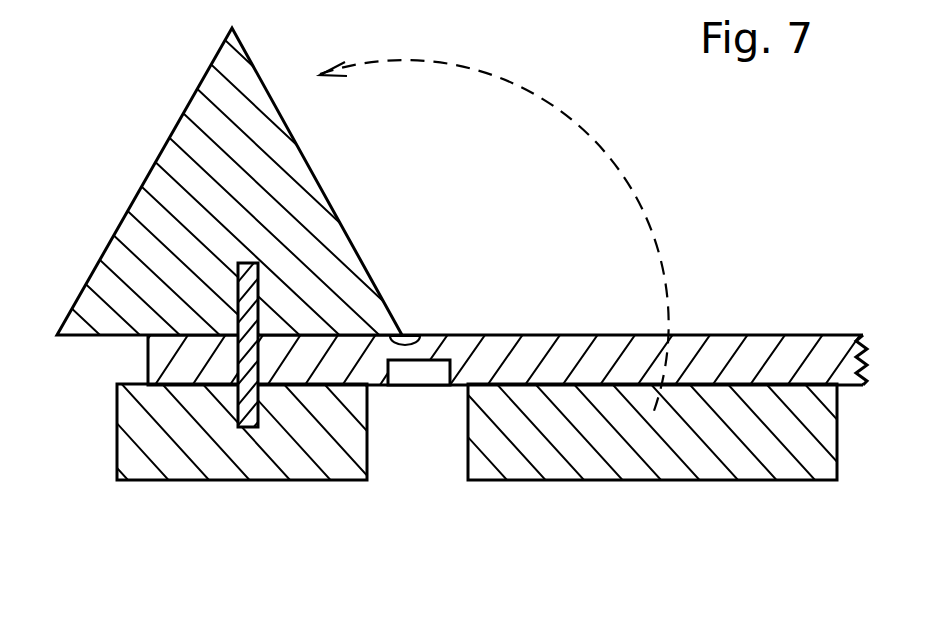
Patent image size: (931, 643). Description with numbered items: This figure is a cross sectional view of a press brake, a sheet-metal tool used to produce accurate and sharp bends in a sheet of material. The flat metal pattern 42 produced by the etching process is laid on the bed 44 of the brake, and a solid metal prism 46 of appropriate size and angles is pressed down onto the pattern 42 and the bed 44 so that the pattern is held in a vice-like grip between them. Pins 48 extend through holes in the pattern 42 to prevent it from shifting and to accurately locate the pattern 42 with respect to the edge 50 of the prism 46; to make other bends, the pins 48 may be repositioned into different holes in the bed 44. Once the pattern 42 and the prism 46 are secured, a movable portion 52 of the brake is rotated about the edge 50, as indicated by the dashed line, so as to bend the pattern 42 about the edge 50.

The flat metal pattern 42 is at (155, 356).
The bed 44 is at (133, 384).
The solid metal prism 46 is at (300, 186).
The pins 48 is at (257, 362).
The edge 50 is at (402, 333).
The movable portion 52 is at (587, 458).